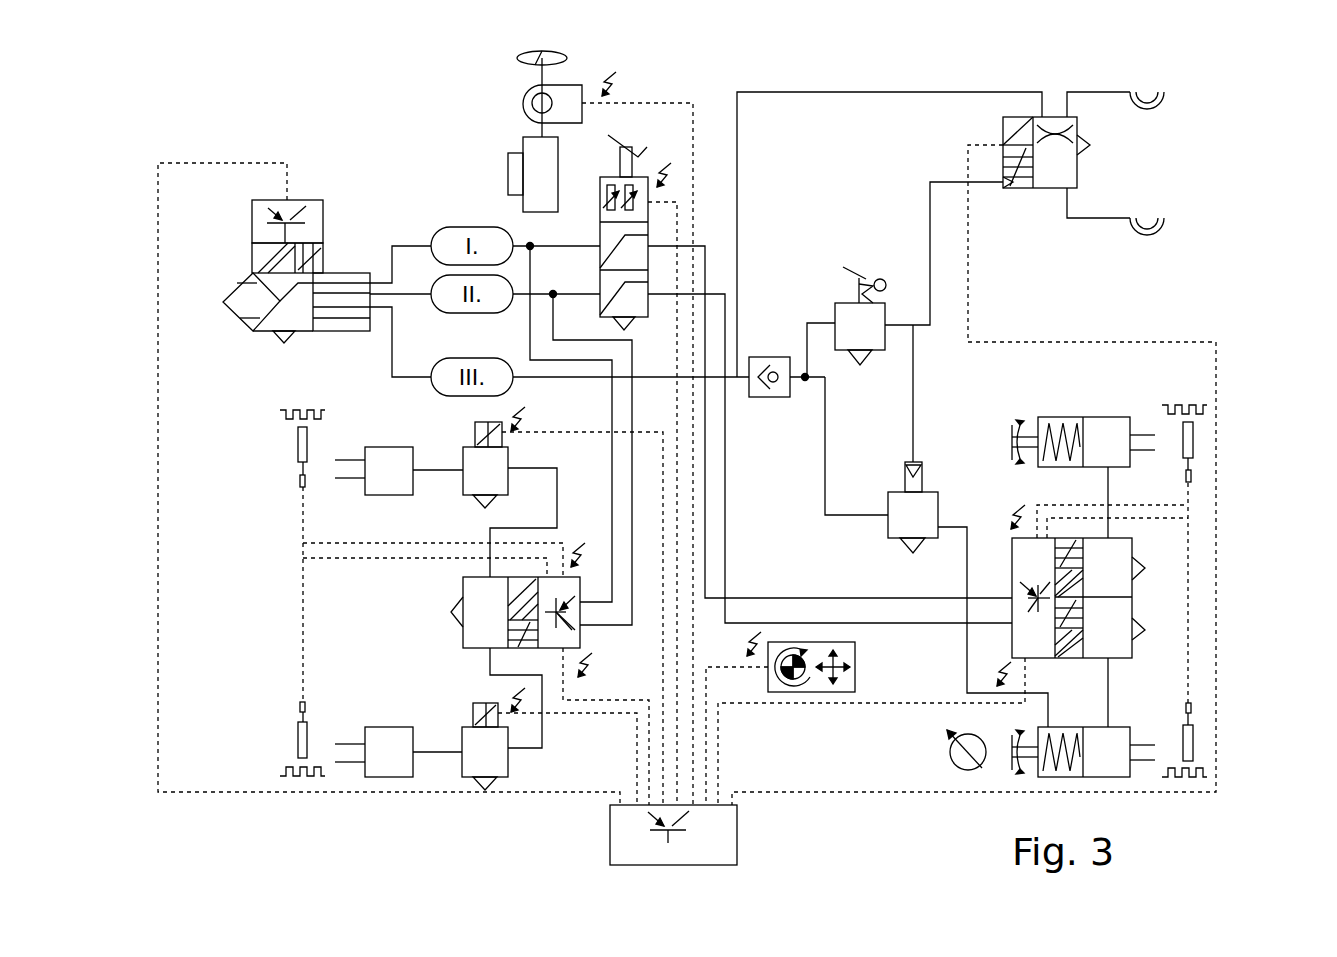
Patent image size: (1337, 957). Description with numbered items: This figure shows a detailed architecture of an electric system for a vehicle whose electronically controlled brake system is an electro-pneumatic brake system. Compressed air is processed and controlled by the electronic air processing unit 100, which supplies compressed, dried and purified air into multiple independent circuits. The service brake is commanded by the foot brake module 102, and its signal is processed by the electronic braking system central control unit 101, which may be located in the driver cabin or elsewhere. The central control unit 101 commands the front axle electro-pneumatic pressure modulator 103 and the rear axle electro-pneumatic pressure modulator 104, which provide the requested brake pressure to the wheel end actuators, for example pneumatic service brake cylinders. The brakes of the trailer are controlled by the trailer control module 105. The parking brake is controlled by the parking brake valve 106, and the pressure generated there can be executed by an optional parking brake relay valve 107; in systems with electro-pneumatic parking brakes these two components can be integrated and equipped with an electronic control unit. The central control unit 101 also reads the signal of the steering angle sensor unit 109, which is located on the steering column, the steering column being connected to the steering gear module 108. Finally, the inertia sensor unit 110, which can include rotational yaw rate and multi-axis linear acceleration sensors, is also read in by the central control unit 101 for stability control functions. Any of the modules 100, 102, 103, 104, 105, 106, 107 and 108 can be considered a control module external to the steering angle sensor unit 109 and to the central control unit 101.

The electronic air processing unit 100 is at (243, 280).
The electronic braking system central control unit EBS ECU 101 is at (737, 820).
The foot brake module FBM 102 is at (600, 232).
The front axle electro-pneumatic pressure modulator 103 is at (463, 632).
The rear axle electro-pneumatic pressure modulator 104 is at (1132, 602).
The trailer control module TCM 105 is at (1080, 127).
The parking brake valve PBM 106 is at (843, 303).
The parking brake relay valve 107 is at (895, 492).
The steering gear module 108 is at (508, 172).
The steering angle sensor unit 109 is at (524, 103).
The inertia sensor unit 110 is at (855, 650).